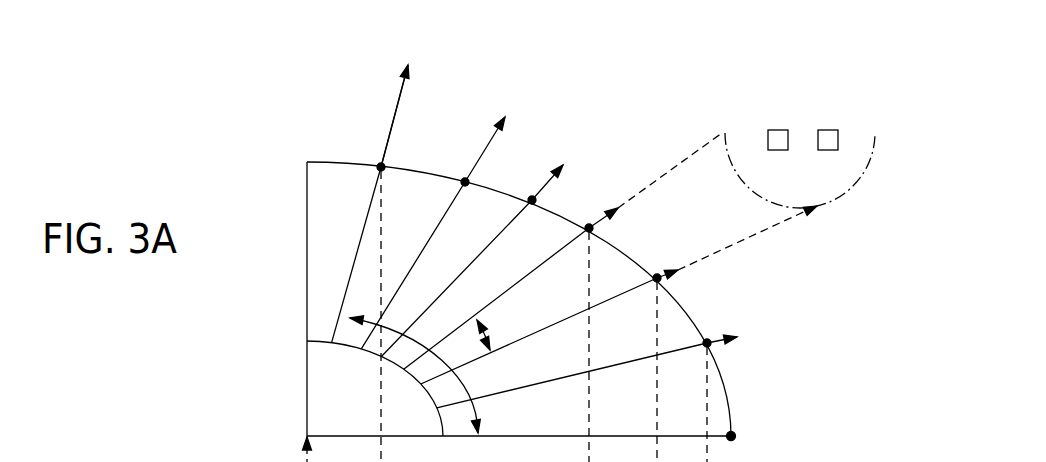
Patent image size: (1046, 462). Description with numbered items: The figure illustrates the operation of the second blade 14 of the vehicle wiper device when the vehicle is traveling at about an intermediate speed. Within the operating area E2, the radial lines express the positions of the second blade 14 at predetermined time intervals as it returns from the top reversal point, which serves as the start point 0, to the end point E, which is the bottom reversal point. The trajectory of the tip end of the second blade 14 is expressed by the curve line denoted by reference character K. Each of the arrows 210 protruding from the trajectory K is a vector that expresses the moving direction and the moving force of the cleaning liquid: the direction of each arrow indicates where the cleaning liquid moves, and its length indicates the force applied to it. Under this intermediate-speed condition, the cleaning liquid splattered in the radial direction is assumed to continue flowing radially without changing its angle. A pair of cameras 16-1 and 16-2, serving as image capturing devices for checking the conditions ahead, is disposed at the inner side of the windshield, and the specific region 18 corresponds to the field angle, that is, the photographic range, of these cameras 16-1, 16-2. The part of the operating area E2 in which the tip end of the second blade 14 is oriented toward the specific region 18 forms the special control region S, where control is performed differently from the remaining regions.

The second blade 14 is at (362, 232).
The arrows 210 is at (398, 96).
The camera 16-1 is at (778, 130).
The camera 16-2 is at (828, 130).
The specific region 18 is at (870, 168).
The trajectory K is at (424, 168).
The start point 0 is at (375, 155).
The end point E is at (742, 435).
The operating area E2 is at (476, 410).
The special control region S is at (493, 332).